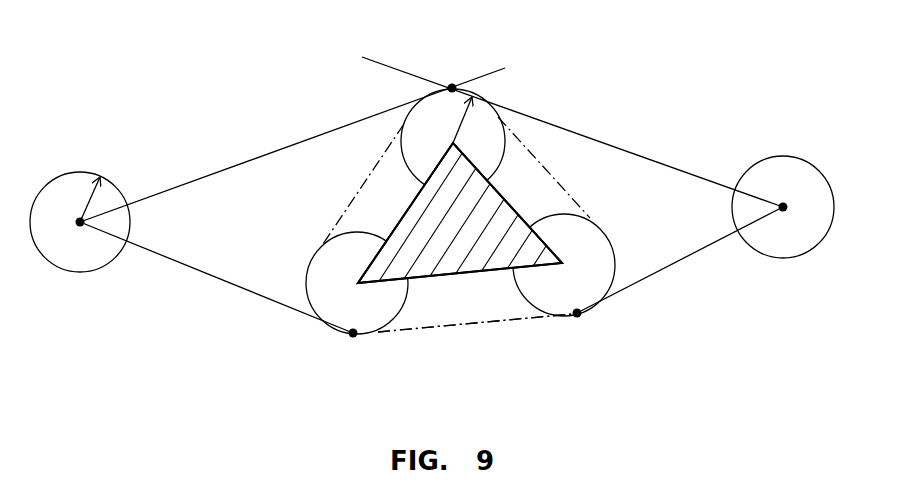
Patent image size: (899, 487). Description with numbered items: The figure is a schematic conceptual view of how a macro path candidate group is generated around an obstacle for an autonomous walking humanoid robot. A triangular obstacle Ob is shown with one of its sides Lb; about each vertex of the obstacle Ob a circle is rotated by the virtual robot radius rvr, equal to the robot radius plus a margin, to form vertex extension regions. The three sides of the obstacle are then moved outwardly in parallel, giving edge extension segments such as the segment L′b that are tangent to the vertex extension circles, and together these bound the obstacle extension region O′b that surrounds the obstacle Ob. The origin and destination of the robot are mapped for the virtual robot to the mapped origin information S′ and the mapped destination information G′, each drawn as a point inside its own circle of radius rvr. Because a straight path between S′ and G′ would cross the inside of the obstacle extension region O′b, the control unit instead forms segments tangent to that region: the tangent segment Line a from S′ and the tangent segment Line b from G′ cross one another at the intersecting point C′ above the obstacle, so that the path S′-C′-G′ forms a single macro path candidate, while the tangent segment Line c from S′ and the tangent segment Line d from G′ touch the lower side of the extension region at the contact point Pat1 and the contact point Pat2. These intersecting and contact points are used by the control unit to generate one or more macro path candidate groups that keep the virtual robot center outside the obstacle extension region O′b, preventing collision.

The line a Line a is at (547, 117).
The line b Line b is at (328, 135).
The line c Line c is at (216, 277).
The line d Line d is at (680, 260).
The mapped origin information S′ is at (80, 243).
The mapped destination information G′ is at (783, 228).
The intersecting point C′ is at (452, 88).
The radius of the virtual robot rvr is at (265, 159).
The obstacle Ob is at (500, 208).
The side of the obstacle Lb is at (402, 213).
The obstacle extension region O′b is at (457, 308).
The edge extension region L′b is at (505, 320).
The contact point Pat1 is at (353, 333).
The contact point Pat2 is at (577, 313).